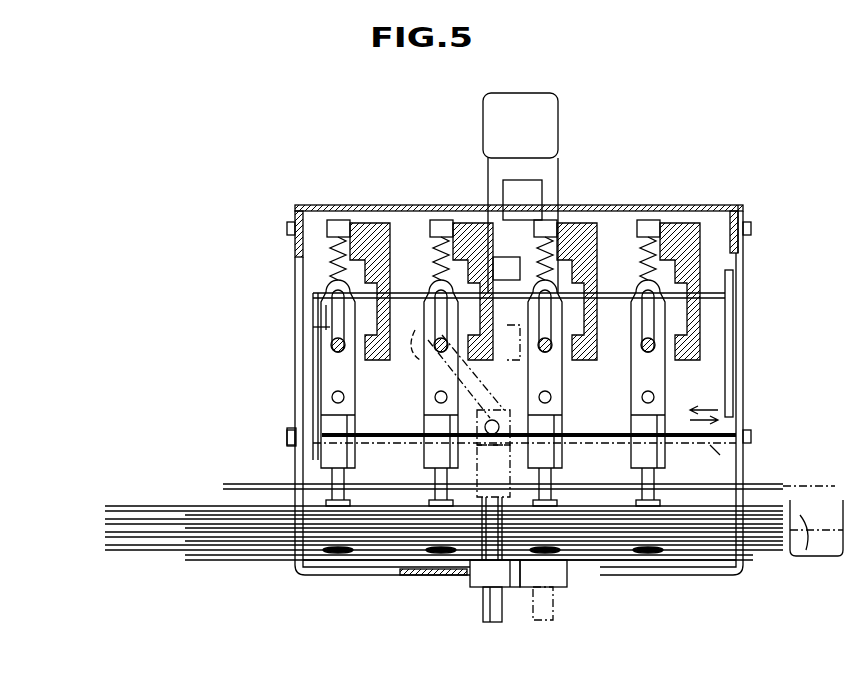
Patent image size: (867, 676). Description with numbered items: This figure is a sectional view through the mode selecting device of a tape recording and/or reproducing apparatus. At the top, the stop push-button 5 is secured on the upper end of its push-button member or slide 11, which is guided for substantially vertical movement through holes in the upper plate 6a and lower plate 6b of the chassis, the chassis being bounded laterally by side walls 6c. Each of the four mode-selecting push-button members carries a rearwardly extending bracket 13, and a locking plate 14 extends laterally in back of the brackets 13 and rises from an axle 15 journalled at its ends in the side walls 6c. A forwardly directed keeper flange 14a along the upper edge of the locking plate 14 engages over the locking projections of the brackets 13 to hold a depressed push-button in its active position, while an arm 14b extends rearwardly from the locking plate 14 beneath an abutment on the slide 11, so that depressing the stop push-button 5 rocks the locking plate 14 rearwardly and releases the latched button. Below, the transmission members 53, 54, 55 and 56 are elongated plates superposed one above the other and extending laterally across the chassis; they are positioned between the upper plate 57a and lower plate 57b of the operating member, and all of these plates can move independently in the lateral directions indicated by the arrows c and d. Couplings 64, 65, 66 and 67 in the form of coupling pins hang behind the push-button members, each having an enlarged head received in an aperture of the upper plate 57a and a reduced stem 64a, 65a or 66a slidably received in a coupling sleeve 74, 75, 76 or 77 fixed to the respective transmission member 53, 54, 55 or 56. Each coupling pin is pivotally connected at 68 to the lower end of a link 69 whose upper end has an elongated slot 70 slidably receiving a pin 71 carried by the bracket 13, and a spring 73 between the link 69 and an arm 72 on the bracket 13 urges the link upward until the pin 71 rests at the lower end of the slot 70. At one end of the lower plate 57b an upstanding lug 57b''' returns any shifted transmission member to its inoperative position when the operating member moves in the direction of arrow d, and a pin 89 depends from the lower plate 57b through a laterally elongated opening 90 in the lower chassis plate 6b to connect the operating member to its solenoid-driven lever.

The stop push-button 5 is at (558, 110).
The push-button member 11 is at (558, 160).
The upper plate 6a is at (705, 207).
The lower plate 6b is at (665, 573).
The side walls 6c is at (738, 337).
The bracket 13 is at (373, 223).
The locking plate 14 is at (726, 330).
The keeper flange 14a is at (741, 270).
The arm 14b is at (496, 345).
The axle 15 is at (383, 433).
The transmission member 53 is at (215, 519).
The transmission member 54 is at (222, 537).
The transmission member 55 is at (200, 506).
The transmission member 56 is at (268, 550).
The upper plate 57a is at (748, 486).
The lower plate 57b is at (473, 585).
The upstanding lug 57b''' is at (819, 544).
The coupling 64 is at (320, 432).
The stem 64a is at (335, 478).
The coupling 65 is at (440, 440).
The stem 65a is at (480, 587).
The coupling 66 is at (560, 426).
The stem 66a is at (556, 480).
The coupling 67 is at (632, 428).
The pivotal connection 68 is at (332, 397).
The link 69 is at (348, 325).
The elongated slot 70 is at (340, 308).
The pin 71 is at (345, 351).
The arm 72 is at (336, 220).
The spring 73 is at (330, 262).
The coupling sleeve 74 is at (338, 553).
The coupling sleeve 75 is at (441, 553).
The coupling sleeve 76 is at (552, 553).
The coupling sleeve 77 is at (660, 500).
The pin 89 is at (502, 615).
The elongated opening 90 is at (548, 600).
The arrow c is at (710, 447).
The arrow d is at (700, 412).